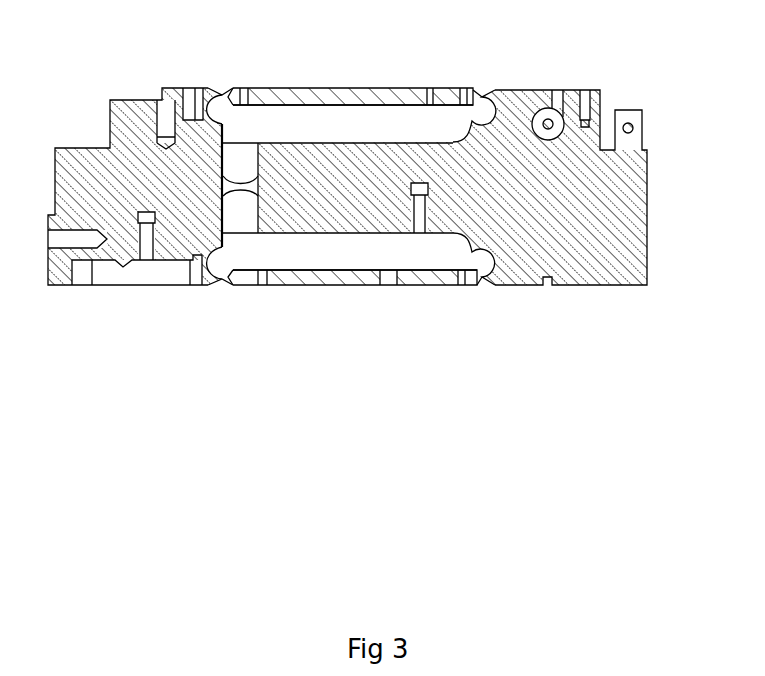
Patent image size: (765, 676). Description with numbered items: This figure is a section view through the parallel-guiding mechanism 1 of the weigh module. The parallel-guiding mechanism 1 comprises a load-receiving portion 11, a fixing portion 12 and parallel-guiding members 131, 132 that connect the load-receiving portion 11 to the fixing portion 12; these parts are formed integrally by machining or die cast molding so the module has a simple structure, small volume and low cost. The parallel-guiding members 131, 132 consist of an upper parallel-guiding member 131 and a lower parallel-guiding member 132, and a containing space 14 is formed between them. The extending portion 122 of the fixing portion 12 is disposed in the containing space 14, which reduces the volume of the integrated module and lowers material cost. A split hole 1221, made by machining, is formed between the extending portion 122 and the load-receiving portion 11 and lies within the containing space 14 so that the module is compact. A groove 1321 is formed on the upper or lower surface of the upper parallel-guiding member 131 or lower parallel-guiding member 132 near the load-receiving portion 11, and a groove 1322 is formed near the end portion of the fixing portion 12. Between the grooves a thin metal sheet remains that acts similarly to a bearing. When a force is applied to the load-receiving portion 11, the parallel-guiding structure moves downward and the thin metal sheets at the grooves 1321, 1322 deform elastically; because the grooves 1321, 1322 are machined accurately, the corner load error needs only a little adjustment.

The parallel-guiding mechanism 1 is at (369, 178).
The load-receiving portion 11 is at (113, 105).
The fixing portion 12 is at (647, 195).
The containing space 14 is at (360, 120).
The extending portion 122 is at (428, 157).
The upper parallel-guiding member 131 is at (288, 100).
The lower parallel-guiding member 132 is at (330, 280).
The split hole 1221 is at (240, 200).
The groove 1321 is at (220, 95).
The groove 1322 is at (484, 96).